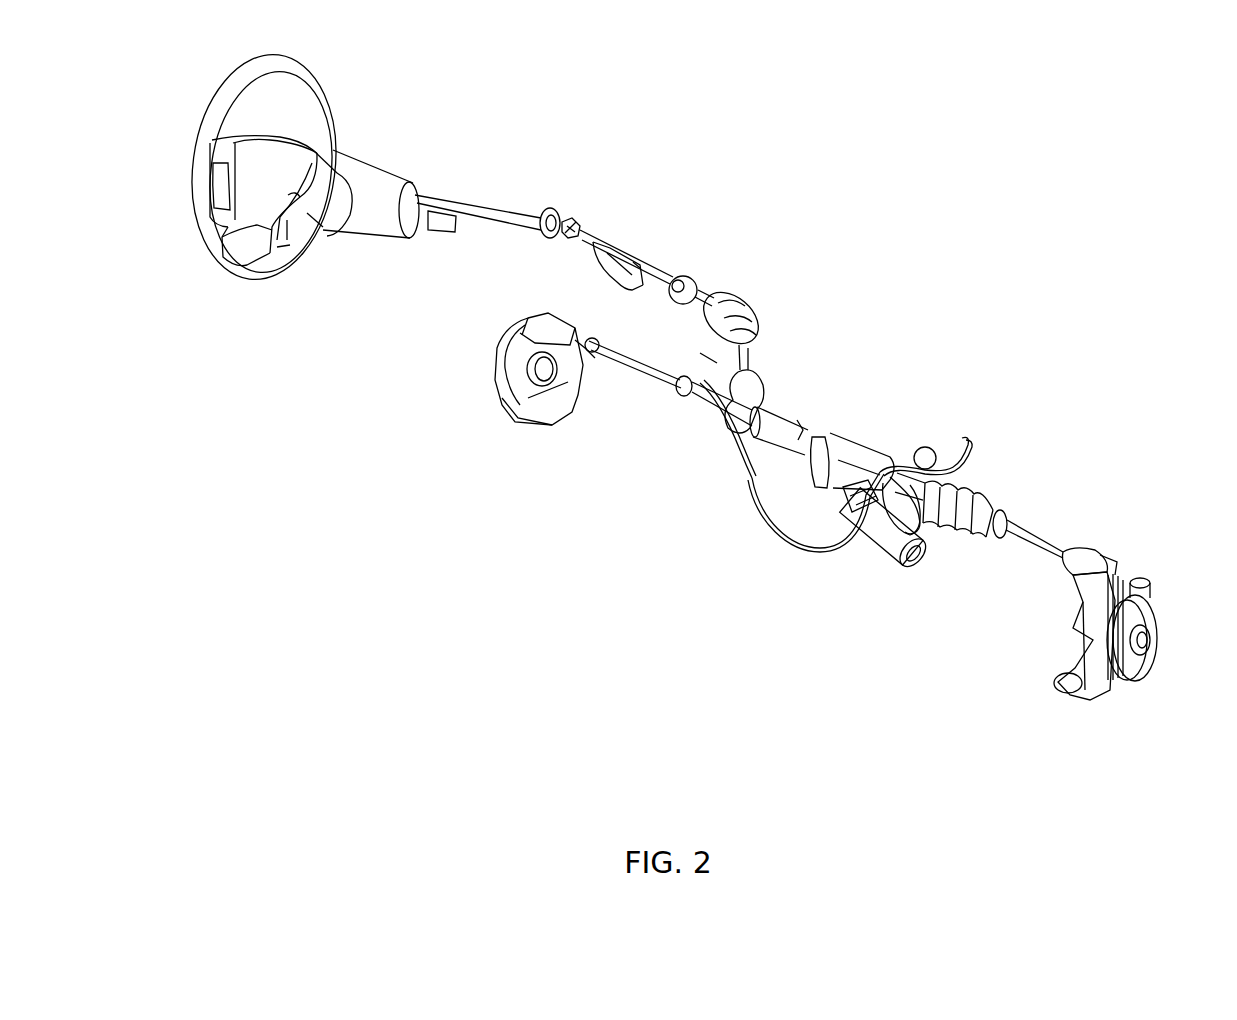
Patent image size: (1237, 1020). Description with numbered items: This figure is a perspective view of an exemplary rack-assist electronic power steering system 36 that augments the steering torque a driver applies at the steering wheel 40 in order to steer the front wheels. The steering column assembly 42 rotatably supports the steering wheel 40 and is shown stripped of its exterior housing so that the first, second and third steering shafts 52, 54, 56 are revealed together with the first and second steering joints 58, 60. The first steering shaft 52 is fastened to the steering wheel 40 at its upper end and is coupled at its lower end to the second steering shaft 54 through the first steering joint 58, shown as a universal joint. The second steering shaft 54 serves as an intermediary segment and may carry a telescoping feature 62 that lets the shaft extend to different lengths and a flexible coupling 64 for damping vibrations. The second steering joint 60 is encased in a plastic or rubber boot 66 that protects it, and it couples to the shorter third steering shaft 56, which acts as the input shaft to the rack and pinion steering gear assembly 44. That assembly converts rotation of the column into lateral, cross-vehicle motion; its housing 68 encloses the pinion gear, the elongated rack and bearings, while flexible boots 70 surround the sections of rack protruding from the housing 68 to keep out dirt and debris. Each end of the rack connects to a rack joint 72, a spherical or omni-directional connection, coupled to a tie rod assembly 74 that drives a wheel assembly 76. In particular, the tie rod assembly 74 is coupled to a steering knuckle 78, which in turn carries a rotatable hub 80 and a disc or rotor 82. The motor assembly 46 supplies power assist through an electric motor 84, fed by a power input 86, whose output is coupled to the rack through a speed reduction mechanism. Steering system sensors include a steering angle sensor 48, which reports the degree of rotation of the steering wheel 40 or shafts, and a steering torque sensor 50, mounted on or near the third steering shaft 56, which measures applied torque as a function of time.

The electronic power steering system 36 is at (868, 227).
The steering wheel 40 is at (318, 88).
The steering column assembly 42 is at (540, 272).
The rack and pinion steering gear assembly 44 is at (797, 340).
The motor assembly 46 is at (856, 566).
The steering angle sensor 48 is at (438, 232).
The steering torque sensor 50 is at (712, 366).
The first steering shaft 52 is at (490, 215).
The second steering shaft 54 is at (583, 205).
The third steering shaft 56 is at (760, 381).
The first steering joint 58 is at (571, 216).
The second steering joint 60 is at (752, 302).
The telescoping feature 62 is at (618, 286).
The flexible coupling 64 is at (677, 306).
The boot 66 is at (726, 288).
The housing 68 is at (722, 432).
The flexible boot 70 is at (680, 392).
The rack joint 72 is at (1010, 522).
The tie rod assembly 74 is at (1040, 548).
The wheel assembly 76 is at (1143, 603).
The steering knuckle 78 is at (1108, 566).
The rotatable hub 80 is at (1160, 626).
The disc or rotor 82 is at (1153, 604).
The electric motor 84 is at (900, 556).
The power input 86 is at (968, 446).